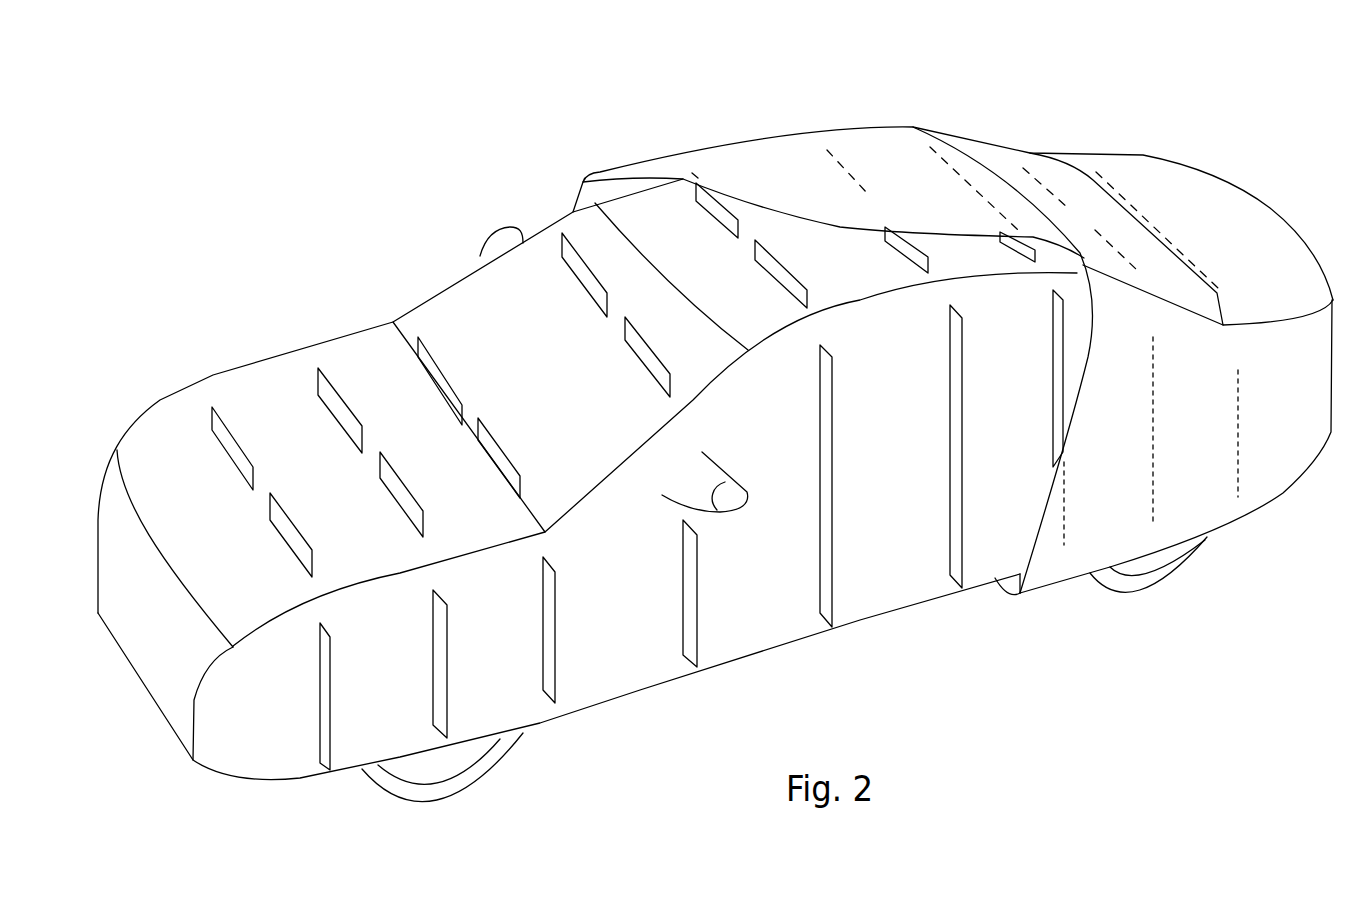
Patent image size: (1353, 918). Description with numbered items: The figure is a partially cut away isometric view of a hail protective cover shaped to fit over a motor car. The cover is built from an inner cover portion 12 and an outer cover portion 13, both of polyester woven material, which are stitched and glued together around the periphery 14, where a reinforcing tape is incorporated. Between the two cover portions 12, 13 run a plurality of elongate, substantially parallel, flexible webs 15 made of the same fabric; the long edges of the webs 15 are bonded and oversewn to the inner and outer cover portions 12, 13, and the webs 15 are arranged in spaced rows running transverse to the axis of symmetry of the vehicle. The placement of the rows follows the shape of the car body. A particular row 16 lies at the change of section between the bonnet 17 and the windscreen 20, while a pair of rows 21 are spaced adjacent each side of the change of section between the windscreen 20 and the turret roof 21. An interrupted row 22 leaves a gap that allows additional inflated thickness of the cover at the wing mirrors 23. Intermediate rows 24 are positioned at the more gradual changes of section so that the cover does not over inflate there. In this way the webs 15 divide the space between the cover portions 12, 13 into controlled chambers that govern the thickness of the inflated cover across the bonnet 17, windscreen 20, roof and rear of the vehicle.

The inner cover portion 12 is at (640, 643).
The outer cover portion 13 is at (1268, 472).
The periphery 14 is at (1037, 573).
The flexible webs 15 is at (828, 510).
The particular row 16 is at (557, 633).
The bonnet 17 is at (273, 397).
The windscreen 20 is at (493, 310).
The pair of rows 21 is at (662, 213).
The interrupted row 22 is at (633, 372).
The wing mirrors 23 is at (708, 468).
The intermediate rows 24 is at (387, 488).